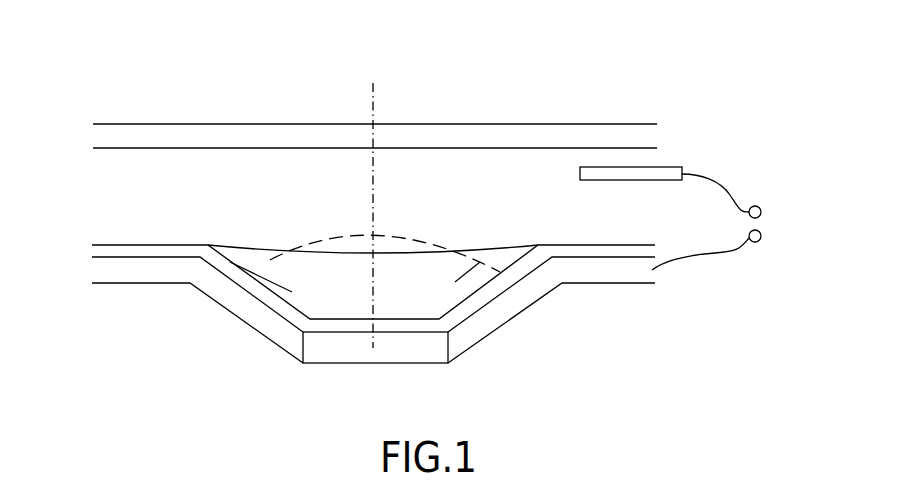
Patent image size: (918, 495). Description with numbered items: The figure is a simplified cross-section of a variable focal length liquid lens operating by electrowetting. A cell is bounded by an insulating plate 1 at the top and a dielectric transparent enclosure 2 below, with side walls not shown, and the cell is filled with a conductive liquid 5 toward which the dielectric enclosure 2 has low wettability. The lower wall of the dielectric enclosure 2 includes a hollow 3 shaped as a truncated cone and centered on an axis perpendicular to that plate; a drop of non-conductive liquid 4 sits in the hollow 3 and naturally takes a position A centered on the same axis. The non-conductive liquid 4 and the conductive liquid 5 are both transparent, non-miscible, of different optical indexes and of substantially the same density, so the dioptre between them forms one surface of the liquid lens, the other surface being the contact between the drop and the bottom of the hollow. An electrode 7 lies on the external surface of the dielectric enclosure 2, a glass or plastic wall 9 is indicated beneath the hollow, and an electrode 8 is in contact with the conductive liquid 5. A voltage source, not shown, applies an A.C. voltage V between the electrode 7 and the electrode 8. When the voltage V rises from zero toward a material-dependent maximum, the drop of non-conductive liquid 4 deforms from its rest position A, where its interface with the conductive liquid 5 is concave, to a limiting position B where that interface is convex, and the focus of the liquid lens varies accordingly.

The insulating plate 1 is at (525, 137).
The dielectric transparent enclosure 2 is at (98, 252).
The hollow 3 is at (273, 278).
The non-conductive liquid 4 is at (318, 263).
The conductive liquid 5 is at (222, 160).
The electrode 7 is at (123, 272).
The electrode 8 is at (665, 173).
The glass or plastic wall 9 is at (413, 345).
The position A is at (495, 249).
The position B is at (400, 232).
The A.C. voltage V is at (720, 222).